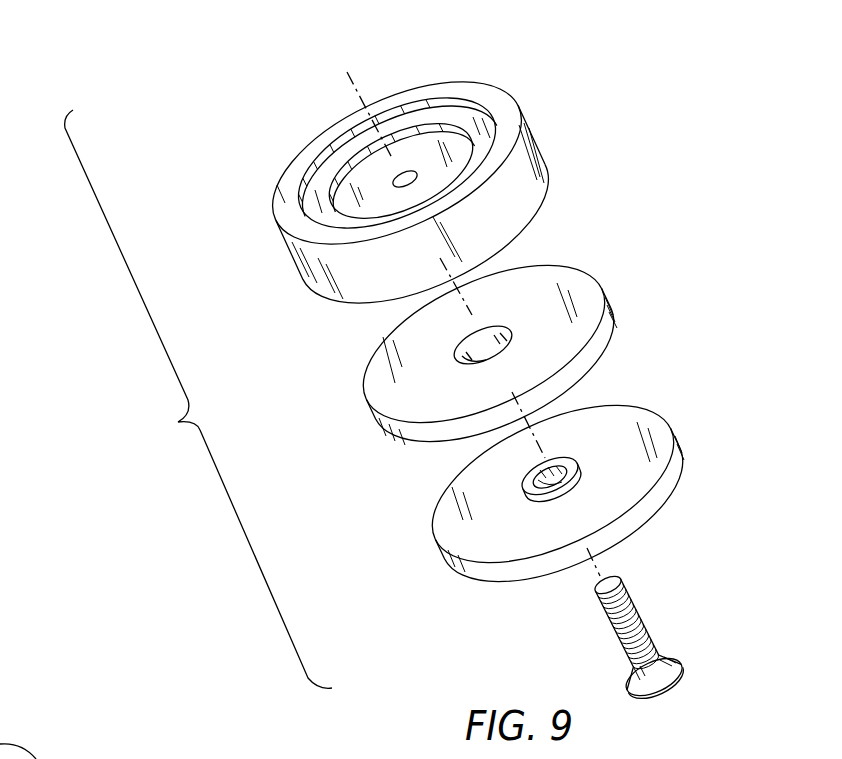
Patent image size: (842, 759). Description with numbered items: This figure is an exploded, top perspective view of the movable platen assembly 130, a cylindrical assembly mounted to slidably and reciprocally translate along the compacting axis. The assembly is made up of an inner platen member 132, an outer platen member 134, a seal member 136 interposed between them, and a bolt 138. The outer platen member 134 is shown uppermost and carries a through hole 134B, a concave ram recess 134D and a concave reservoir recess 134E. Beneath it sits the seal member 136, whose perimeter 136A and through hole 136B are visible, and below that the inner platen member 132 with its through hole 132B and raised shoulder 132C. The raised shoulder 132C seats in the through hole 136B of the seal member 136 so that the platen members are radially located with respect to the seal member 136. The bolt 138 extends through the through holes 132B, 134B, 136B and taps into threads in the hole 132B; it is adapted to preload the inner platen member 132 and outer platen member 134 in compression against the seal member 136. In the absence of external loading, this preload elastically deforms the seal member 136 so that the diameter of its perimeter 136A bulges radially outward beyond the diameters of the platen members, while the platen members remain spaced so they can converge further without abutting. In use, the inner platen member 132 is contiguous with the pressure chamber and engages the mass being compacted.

The movable platen assembly 130 is at (209, 56).
The inner platen member 132 is at (544, 473).
The through hole 132B is at (533, 477).
The raised shoulder 132C is at (573, 460).
The outer platen member 134 is at (397, 169).
The through hole 134B is at (397, 179).
The concave ram recess 134D is at (455, 120).
The concave reservoir recess 134E is at (343, 197).
The seal member 136 is at (490, 344).
The perimeter 136A is at (615, 317).
The through hole 136B is at (457, 340).
The bolt 138 is at (628, 593).